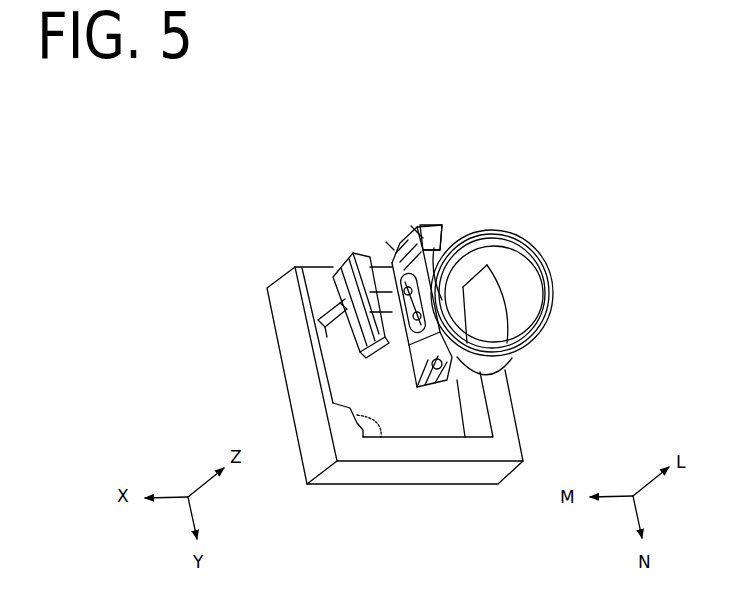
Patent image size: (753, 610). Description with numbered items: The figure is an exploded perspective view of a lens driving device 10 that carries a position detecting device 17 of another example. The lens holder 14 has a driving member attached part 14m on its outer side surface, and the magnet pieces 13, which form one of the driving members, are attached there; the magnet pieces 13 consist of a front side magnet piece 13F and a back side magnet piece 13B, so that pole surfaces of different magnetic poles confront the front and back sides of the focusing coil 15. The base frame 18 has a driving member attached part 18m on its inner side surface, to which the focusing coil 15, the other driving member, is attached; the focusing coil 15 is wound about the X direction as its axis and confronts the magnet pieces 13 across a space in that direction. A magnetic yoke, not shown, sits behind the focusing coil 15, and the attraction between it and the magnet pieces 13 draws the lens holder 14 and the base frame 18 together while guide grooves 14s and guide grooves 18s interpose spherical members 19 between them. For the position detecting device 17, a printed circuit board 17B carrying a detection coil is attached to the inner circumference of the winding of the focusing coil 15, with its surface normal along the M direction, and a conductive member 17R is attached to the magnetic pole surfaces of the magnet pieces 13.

The optical device 10 is at (222, 179).
The magnet pieces 13 is at (268, 294).
The front side magnet piece 13F is at (338, 262).
The back side magnet piece 13B is at (340, 298).
The lens holder 14 is at (517, 266).
The guide grooves 14s is at (411, 226).
The driving member attached part 14m is at (440, 224).
The focusing coil 15 is at (445, 330).
The position detecting device 17 is at (393, 325).
The conductive member 17R is at (399, 326).
The printed circuit board 17B is at (418, 370).
The base frame 18 is at (507, 430).
The driving member attached part 18m is at (318, 343).
The guide grooves 18s is at (378, 430).
The spherical members 19 is at (386, 242).